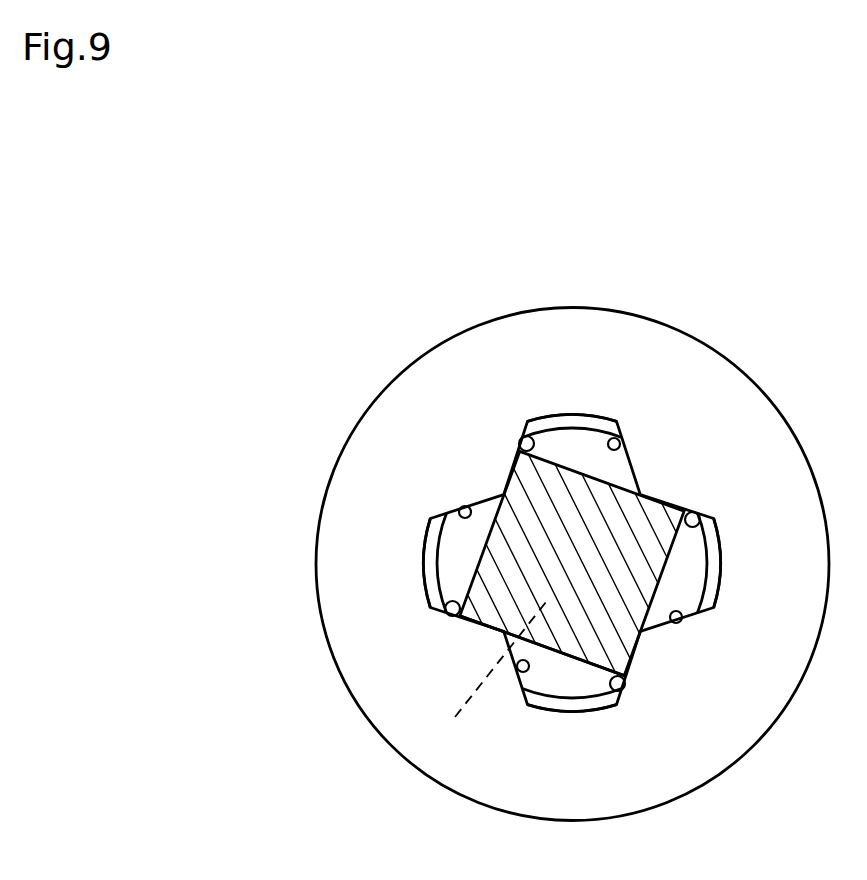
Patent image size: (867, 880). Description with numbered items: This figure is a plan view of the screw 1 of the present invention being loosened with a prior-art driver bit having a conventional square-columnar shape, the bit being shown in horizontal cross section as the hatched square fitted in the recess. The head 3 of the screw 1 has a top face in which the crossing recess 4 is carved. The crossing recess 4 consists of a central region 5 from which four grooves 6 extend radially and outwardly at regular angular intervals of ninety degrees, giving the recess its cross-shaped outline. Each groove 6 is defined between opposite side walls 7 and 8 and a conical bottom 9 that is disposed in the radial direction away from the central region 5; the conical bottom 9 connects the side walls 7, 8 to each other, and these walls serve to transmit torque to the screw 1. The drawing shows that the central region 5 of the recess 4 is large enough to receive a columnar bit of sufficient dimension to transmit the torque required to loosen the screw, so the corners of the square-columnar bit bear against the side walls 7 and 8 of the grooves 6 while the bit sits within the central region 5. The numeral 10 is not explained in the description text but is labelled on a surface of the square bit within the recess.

The screw 1 is at (338, 424).
The head 3 is at (780, 460).
The crossing recess 4 is at (650, 466).
The central region 5 is at (496, 681).
The groove 6 is at (580, 452).
The side wall 7 is at (617, 424).
The side wall 8 is at (533, 415).
The conical bottom 9 is at (568, 417).
The contact surface 10 is at (513, 590).